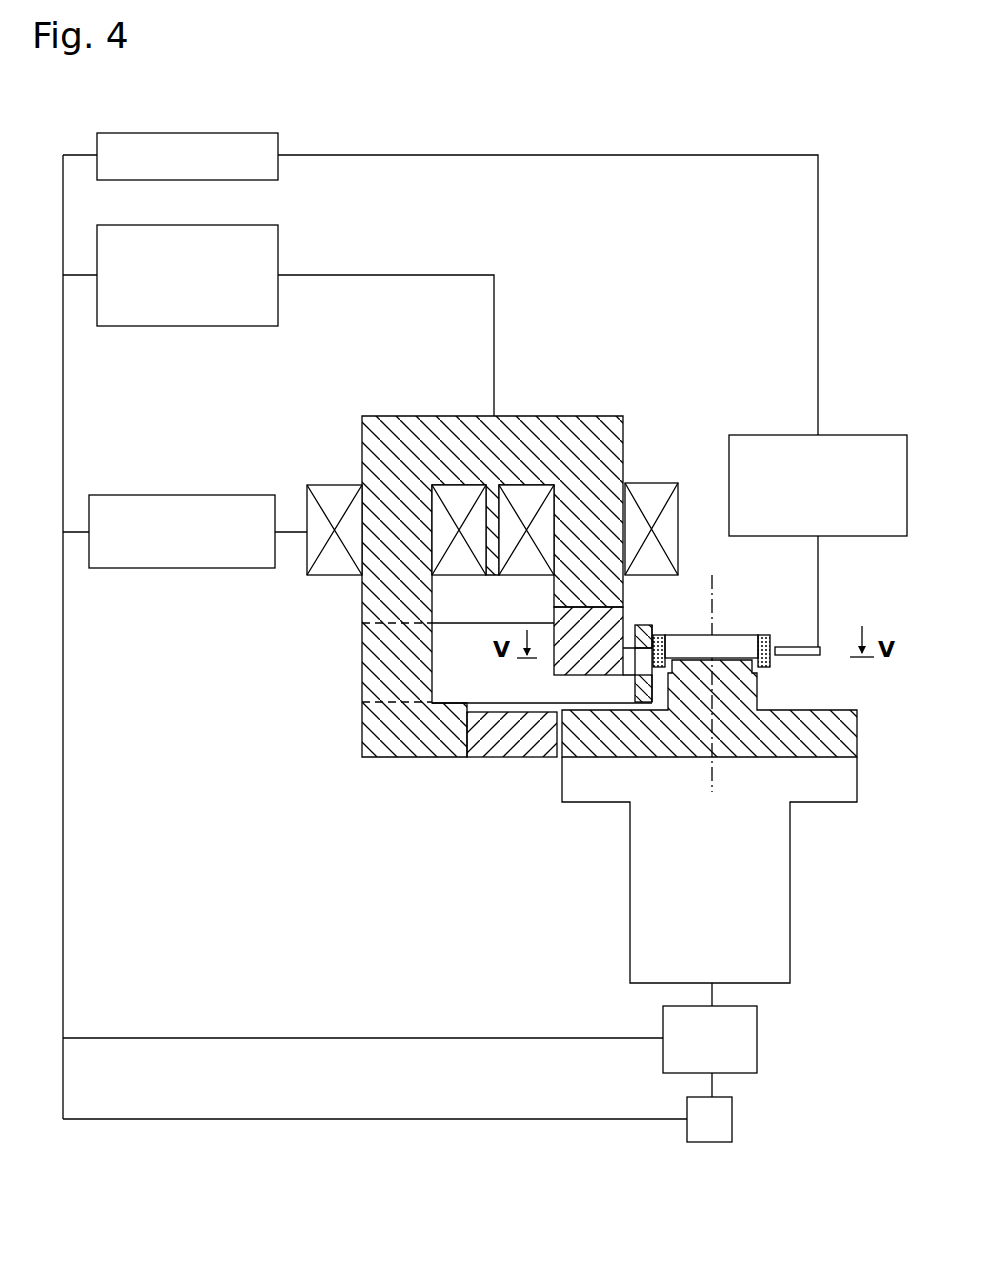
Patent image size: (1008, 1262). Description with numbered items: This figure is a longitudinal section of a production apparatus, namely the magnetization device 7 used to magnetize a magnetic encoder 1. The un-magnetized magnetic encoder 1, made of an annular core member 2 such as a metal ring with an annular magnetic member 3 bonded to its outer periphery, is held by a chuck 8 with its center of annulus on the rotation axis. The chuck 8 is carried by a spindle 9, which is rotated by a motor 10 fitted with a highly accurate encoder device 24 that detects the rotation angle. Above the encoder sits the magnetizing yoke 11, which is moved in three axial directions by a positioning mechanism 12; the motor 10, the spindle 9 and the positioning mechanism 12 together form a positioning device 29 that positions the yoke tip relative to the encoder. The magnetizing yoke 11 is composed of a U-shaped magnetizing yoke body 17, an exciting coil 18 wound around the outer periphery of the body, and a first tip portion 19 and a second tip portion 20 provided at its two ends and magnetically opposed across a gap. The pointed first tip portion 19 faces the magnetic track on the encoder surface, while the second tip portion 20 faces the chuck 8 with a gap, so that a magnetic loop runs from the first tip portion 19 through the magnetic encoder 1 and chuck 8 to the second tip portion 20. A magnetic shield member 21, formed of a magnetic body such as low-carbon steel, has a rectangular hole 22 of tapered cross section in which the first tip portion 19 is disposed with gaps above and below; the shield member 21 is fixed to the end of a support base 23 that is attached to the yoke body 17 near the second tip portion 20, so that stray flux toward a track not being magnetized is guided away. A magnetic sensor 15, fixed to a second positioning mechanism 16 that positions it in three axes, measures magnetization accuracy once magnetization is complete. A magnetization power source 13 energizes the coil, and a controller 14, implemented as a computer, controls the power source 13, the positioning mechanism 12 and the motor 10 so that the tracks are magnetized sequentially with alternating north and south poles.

The magnetic encoder 1 is at (727, 635).
The core member 2 is at (752, 635).
The magnetic member 3 is at (770, 640).
The magnetization device 7 is at (95, 135).
The chuck 8 is at (828, 718).
The spindle 9 is at (787, 864).
The motor 10 is at (757, 1038).
The magnetizing yoke 11 is at (352, 708).
The positioning mechanism 12 is at (186, 326).
The magnetization power source 13 is at (194, 562).
The controller 14 is at (245, 180).
The magnetic sensor 15 is at (798, 655).
The positioning mechanism 16 is at (858, 442).
The magnetizing yoke body 17 is at (365, 660).
The exciting coil 18 is at (318, 575).
The first tip portion 19 is at (627, 665).
The second tip portion 20 is at (512, 760).
The magnetic shield member 21 is at (654, 628).
The rectangular hole 22 is at (630, 633).
The support base 23 is at (477, 630).
The encoder device 24 is at (732, 1119).
The positioning device 29 is at (92, 312).